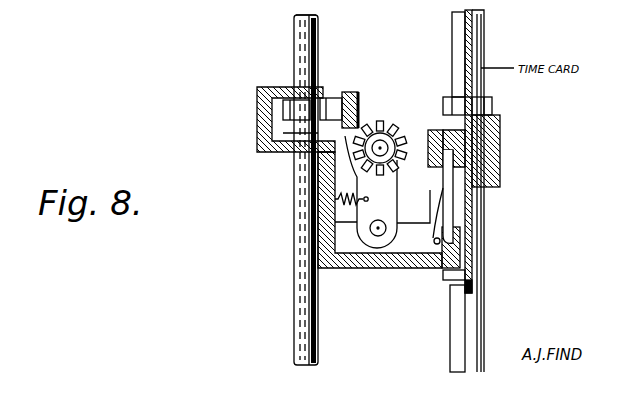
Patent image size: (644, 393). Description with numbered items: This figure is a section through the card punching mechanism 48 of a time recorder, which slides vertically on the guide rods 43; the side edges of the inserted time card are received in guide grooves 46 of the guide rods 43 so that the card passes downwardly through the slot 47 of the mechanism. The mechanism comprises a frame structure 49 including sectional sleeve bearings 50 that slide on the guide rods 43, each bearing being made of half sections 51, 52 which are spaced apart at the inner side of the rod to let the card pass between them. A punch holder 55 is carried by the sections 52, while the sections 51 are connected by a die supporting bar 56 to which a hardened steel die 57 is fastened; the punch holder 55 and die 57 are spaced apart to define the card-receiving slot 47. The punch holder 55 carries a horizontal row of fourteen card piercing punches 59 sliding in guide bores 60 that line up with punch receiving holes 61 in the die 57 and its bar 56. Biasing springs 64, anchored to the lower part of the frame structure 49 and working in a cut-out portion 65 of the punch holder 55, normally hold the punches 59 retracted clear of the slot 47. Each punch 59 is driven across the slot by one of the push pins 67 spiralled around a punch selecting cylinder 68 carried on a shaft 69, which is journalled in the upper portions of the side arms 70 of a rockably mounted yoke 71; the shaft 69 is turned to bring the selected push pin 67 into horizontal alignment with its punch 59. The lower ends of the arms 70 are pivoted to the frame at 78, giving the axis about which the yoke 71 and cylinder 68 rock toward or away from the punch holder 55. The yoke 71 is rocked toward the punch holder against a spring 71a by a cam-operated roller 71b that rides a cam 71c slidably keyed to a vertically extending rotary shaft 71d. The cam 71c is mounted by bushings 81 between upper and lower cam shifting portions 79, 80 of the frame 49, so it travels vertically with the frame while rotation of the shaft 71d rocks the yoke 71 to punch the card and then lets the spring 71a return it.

The guide rods 43 is at (485, 34).
The guide grooves 46 is at (456, 35).
The slot 47 is at (442, 122).
The card punching mechanism 48 is at (364, 272).
The frame structure 49 is at (320, 216).
The sectional sleeve bearings 50 is at (496, 216).
The half section 51 is at (476, 263).
The half section 52 is at (460, 200).
The punch holder 55 is at (389, 137).
The die supporting bar 56 is at (500, 128).
The die 57 is at (494, 112).
The card piercing punches 59 is at (393, 162).
The guide bores 60 is at (433, 124).
The punch receiving holes 61 is at (495, 150).
The biasing springs 64 is at (454, 231).
The cut-out portion 65 is at (493, 177).
The push pins 67 is at (440, 195).
The punch selecting cylinder 68 is at (364, 130).
The shaft 69 is at (381, 146).
The side arms 70 is at (297, 254).
The yoke 71 is at (347, 196).
The spring 71a is at (326, 222).
The cam-operated roller 71b is at (333, 98).
The cam 71c is at (290, 117).
The rotary shaft 71d is at (298, 52).
The pivot 78 is at (401, 270).
The upper cam shifting portion 79 is at (270, 92).
The lower cam shifting portion 80 is at (271, 151).
The bushings 81 is at (283, 101).